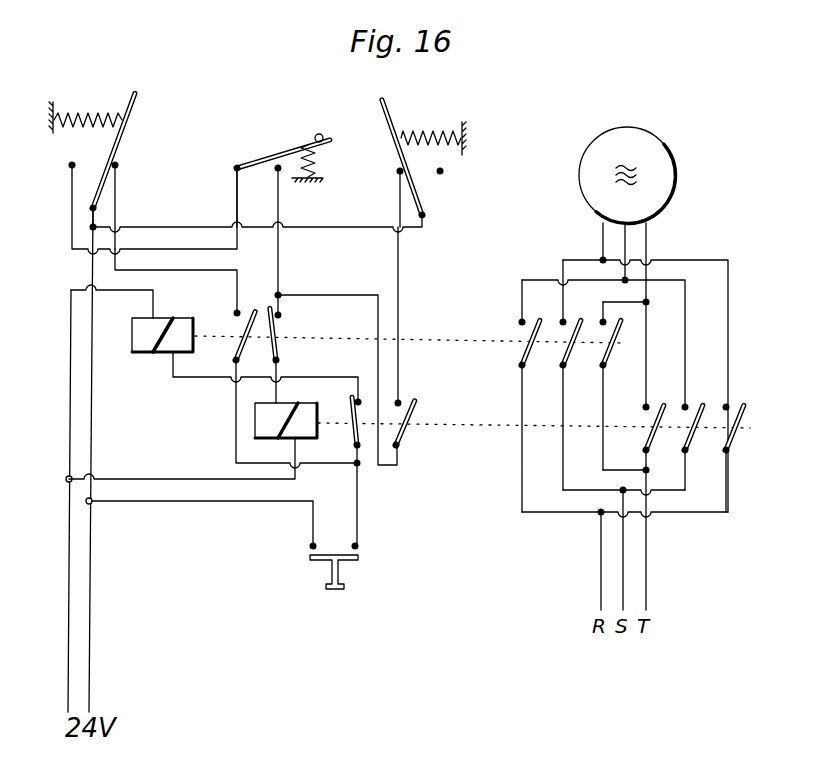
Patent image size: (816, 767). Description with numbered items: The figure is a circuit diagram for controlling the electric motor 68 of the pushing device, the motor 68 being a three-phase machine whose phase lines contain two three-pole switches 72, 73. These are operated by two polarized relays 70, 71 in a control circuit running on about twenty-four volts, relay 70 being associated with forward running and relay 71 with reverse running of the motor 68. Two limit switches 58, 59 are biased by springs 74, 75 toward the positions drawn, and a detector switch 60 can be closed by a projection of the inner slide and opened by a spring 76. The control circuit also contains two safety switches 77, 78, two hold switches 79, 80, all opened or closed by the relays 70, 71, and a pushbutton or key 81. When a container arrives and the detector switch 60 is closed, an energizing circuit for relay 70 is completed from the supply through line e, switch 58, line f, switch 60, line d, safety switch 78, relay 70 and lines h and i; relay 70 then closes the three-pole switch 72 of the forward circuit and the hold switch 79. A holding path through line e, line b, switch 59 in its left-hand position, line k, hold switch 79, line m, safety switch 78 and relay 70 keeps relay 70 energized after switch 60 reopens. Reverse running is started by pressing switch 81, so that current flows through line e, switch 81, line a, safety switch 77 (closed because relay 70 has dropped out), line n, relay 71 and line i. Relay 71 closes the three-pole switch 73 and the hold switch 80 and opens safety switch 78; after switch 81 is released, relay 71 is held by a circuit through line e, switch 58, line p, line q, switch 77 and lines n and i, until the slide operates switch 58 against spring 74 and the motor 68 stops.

The limit switch 58 is at (150, 107).
The limit switch 59 is at (384, 115).
The detector switch 60 is at (288, 152).
The electric motor 68 is at (667, 163).
The polarized relay 70 is at (304, 405).
The polarized relay 71 is at (184, 327).
The three-pole switch 72 is at (730, 430).
The three-pole switch 73 is at (570, 345).
The spring 74 is at (96, 114).
The spring 75 is at (430, 130).
The spring 76 is at (318, 170).
The safety switch 77 is at (353, 423).
The safety switch 78 is at (271, 334).
The hold switch 79 is at (403, 430).
The hold switch 80 is at (244, 338).
The pushbutton switch 81 is at (340, 570).
The line a is at (359, 505).
The line b is at (342, 228).
The line d is at (279, 268).
The line e is at (91, 583).
The line f is at (86, 250).
The line h is at (179, 479).
The line i is at (68, 598).
The line k is at (399, 313).
The line m is at (355, 295).
The line n is at (316, 377).
The line p is at (191, 270).
The line q is at (235, 421).